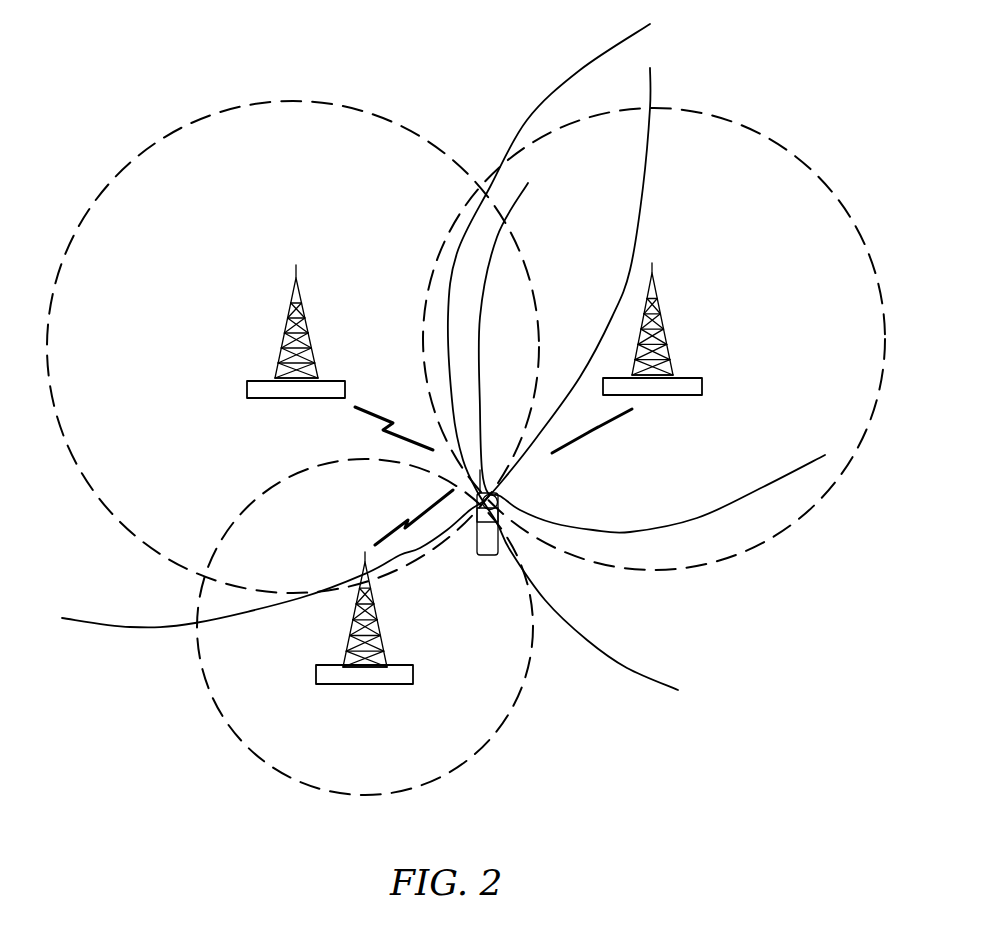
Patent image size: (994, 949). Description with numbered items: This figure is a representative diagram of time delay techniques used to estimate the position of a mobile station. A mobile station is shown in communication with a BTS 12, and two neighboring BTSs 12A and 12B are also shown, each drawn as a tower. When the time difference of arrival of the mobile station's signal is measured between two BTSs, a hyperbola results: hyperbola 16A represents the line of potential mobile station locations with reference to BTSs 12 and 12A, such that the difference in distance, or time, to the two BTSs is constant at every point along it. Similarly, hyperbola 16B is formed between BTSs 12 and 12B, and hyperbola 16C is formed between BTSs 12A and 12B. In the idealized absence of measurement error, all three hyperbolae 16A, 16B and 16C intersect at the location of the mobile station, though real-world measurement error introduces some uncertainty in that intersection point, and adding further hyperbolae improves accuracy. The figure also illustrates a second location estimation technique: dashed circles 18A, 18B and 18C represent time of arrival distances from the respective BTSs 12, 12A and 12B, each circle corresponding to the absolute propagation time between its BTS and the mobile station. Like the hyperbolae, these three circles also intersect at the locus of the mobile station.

The BTS 12 is at (390, 685).
The neighboring BTS 12A is at (680, 396).
The neighboring BTS 12B is at (275, 399).
The hyperbola 16A is at (668, 528).
The hyperbola 16B is at (138, 627).
The hyperbola 16C is at (627, 670).
The dashed circle 18A is at (497, 732).
The dashed circle 18B is at (793, 523).
The dashed circle 18C is at (140, 543).